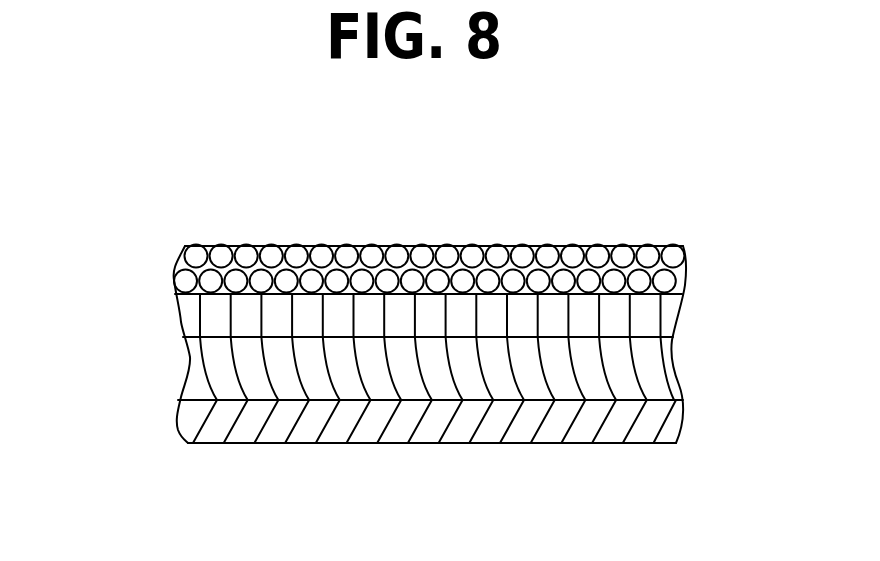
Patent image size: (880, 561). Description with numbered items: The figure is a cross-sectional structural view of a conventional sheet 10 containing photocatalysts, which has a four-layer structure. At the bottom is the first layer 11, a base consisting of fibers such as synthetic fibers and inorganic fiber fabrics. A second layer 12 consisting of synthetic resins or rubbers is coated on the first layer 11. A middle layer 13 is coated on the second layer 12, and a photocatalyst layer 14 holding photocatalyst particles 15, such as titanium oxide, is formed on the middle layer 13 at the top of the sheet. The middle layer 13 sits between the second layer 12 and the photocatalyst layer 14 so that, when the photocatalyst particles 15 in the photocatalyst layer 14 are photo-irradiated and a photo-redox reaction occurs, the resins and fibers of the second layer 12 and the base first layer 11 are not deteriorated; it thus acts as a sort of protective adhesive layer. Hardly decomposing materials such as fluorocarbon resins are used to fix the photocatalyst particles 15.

The conventional sheet 10 is at (383, 202).
The first layer 11 is at (180, 425).
The second layer 12 is at (186, 370).
The middle layer 13 is at (181, 322).
The photocatalyst layer 14 is at (175, 278).
The photocatalyst particles 15 is at (245, 247).